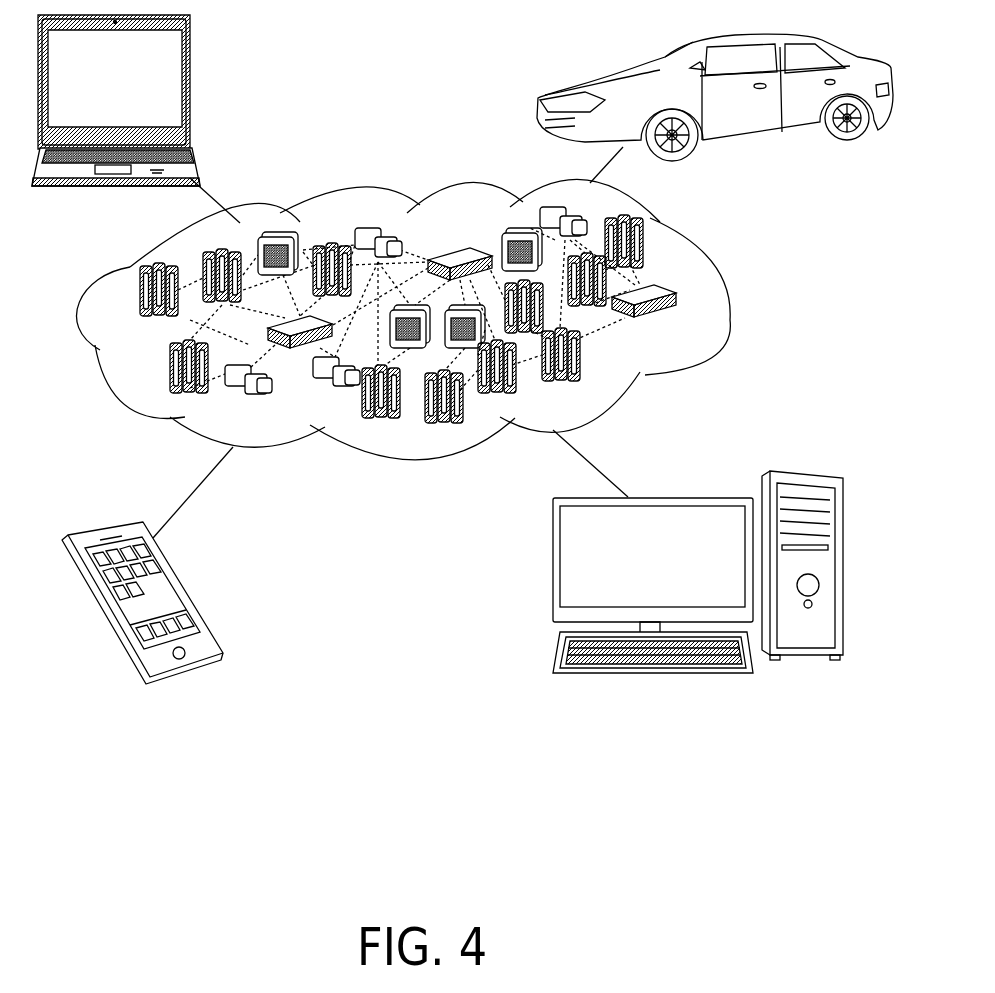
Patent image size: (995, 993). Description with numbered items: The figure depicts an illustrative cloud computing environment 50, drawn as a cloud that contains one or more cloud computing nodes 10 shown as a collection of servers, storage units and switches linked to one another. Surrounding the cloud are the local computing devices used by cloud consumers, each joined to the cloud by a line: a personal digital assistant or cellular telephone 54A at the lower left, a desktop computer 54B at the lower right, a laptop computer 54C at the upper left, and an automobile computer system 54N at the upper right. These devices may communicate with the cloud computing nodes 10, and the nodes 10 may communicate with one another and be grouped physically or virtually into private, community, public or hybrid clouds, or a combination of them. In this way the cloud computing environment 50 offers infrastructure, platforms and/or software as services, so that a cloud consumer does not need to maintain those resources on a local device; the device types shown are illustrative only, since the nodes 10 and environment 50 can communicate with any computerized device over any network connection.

The laptop computer 54C is at (190, 93).
The automobile computer system 54N is at (543, 102).
The cloud computing environment 50 is at (431, 319).
The cloud computing node 10 is at (673, 311).
The personal digital assistant or cellular telephone 54A is at (165, 588).
The desktop computer 54B is at (742, 482).